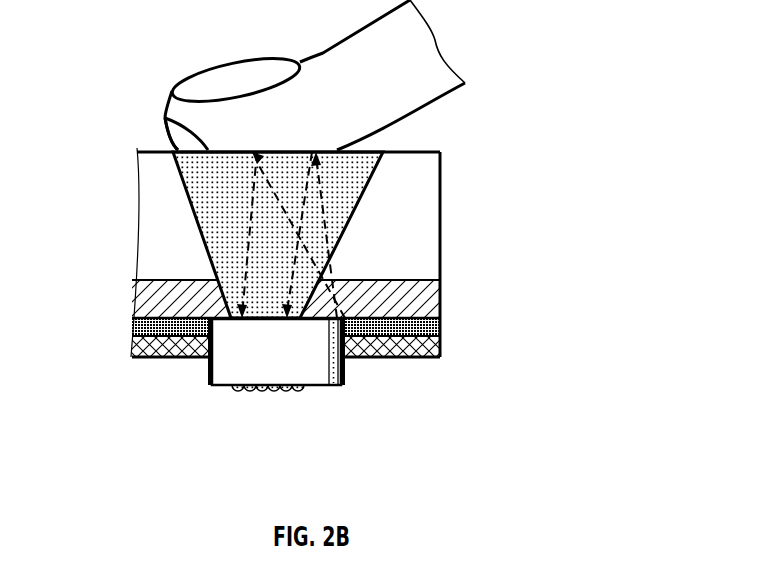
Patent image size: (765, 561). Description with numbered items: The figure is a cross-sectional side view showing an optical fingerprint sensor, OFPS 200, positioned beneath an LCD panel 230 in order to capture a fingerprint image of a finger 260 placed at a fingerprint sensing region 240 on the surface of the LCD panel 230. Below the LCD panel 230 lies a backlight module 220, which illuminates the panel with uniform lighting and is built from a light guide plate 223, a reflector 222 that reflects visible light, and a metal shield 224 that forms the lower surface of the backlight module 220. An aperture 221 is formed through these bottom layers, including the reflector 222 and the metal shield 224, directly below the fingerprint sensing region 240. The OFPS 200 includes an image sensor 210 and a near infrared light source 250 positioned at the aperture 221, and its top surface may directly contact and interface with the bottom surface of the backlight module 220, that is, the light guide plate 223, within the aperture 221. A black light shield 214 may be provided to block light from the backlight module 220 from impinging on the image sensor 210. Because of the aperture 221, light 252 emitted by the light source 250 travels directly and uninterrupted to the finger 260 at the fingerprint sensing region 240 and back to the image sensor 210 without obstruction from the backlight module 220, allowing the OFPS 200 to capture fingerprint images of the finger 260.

The OFPS 200 is at (321, 249).
The image sensor 210 is at (283, 362).
The black light shield 214 is at (210, 384).
The backlight module 220 is at (289, 325).
The aperture 221 is at (197, 363).
The reflector 222 is at (440, 325).
The light guide plate 223 is at (440, 295).
The metal shield 224 is at (440, 352).
The LCD panel 230 is at (152, 228).
The fingerprint sensing region 240 is at (165, 118).
The NIR light source 250 is at (334, 387).
The light 252 is at (333, 228).
The finger 260 is at (308, 123).